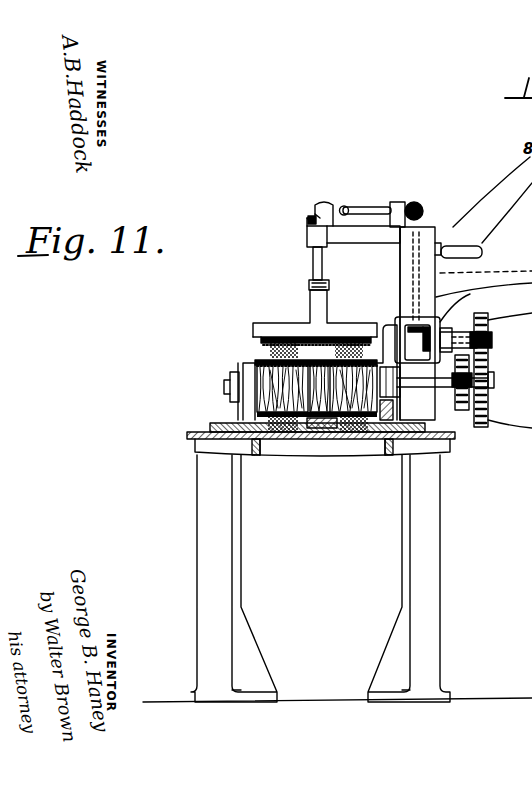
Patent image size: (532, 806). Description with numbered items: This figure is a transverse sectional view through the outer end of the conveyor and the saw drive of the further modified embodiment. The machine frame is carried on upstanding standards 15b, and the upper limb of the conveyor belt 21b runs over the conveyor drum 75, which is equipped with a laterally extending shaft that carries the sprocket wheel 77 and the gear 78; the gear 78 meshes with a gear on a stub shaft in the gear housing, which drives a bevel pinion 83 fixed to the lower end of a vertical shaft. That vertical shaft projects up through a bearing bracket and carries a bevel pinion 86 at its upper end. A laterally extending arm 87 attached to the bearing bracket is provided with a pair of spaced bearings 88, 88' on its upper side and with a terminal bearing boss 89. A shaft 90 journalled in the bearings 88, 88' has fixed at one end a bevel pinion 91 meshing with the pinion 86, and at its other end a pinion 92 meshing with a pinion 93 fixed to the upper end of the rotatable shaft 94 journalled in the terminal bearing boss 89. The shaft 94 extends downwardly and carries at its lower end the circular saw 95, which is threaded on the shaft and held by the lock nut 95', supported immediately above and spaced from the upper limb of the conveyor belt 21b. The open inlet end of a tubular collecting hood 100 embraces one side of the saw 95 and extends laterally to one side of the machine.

The upstanding standard 15b is at (241, 522).
The conveyor drum 75 is at (243, 413).
The conveyor belt 21b is at (268, 352).
The tubular collecting hood 100 is at (260, 339).
The circular saw 95 is at (267, 313).
The lock nut 95' is at (267, 288).
The rotatable shaft 94 is at (312, 258).
The terminal bearing boss 89 is at (307, 230).
The laterally extending arm 87 is at (386, 229).
The bearing 88' is at (319, 166).
The shaft 90 is at (360, 200).
The bearing 88 is at (415, 134).
The pinion 92 is at (328, 204).
The pinion 93 is at (308, 216).
The bevel pinion 86 is at (440, 222).
The bevel pinion 91 is at (428, 224).
The gear 78 is at (483, 239).
The bevel pinion 83 is at (408, 325).
The sprocket wheel 77 is at (461, 410).